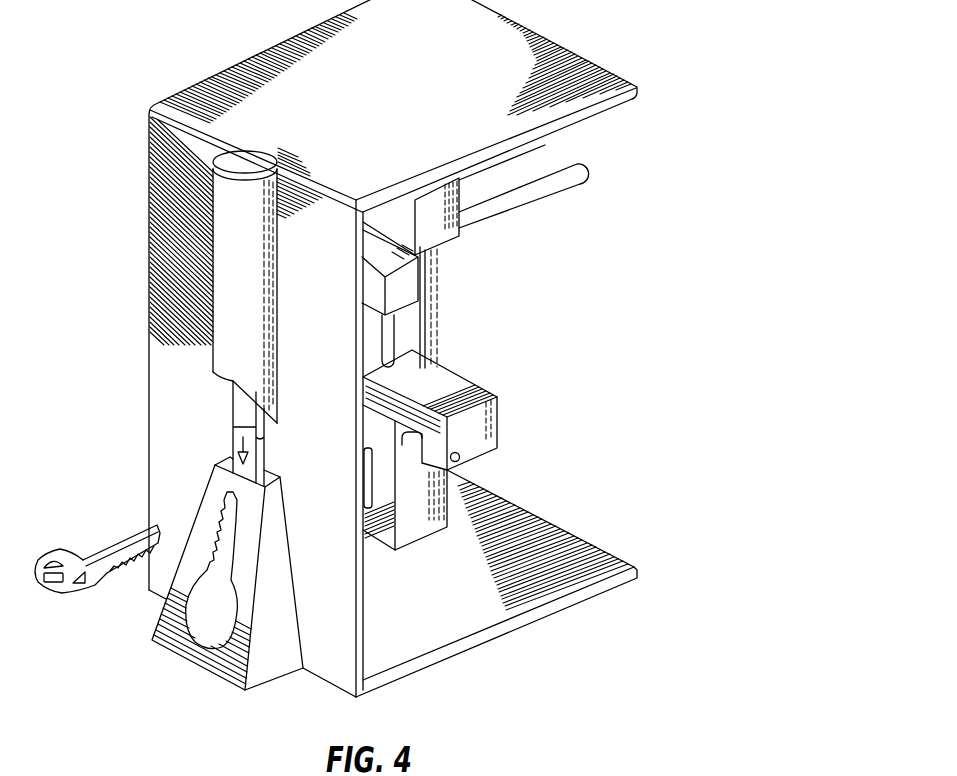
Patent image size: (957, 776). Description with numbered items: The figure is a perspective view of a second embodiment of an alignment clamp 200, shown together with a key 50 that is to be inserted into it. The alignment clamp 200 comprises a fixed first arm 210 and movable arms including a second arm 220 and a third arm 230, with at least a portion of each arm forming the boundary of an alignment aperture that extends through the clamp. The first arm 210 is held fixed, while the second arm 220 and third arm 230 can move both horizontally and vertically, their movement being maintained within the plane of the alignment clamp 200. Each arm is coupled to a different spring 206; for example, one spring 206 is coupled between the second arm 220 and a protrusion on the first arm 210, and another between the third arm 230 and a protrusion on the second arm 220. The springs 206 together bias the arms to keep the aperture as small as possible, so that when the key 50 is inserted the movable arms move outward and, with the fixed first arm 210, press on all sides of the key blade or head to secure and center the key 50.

The key 50 is at (50, 597).
The alignment clamp 200 is at (420, 508).
The spring 206 is at (398, 338).
The first arm 210 is at (398, 290).
The second arm 220 is at (470, 425).
The third arm 230 is at (415, 488).